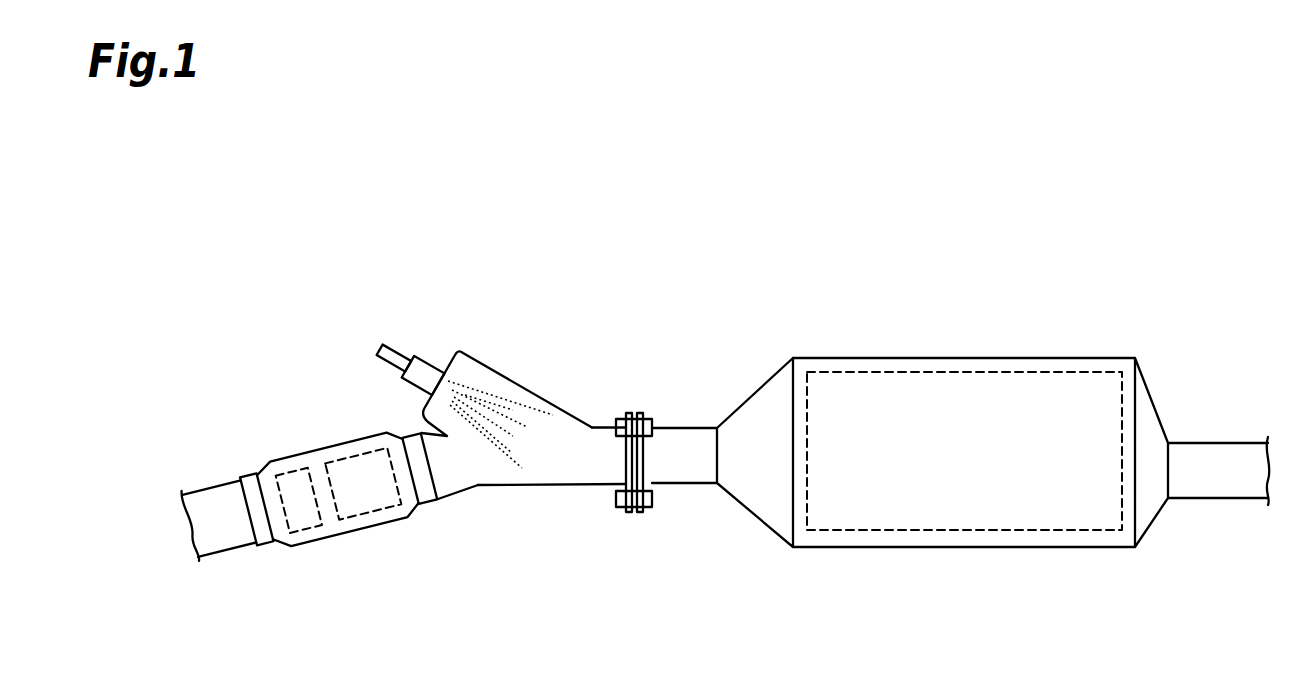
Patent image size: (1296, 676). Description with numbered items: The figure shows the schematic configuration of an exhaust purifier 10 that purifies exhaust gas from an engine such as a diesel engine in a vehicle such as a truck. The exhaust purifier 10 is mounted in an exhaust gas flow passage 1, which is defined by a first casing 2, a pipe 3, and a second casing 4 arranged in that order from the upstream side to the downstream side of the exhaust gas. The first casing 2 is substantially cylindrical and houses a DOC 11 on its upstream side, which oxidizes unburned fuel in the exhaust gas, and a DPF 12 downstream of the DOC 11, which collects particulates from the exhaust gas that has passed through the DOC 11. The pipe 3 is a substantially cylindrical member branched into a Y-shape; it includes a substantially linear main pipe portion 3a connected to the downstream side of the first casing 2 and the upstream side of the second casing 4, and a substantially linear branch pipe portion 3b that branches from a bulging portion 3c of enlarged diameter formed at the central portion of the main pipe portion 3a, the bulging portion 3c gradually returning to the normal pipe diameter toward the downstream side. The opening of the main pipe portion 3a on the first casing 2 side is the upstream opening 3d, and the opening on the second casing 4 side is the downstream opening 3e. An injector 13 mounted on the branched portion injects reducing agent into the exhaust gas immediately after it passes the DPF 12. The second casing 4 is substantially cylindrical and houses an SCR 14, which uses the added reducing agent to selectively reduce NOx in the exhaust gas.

The exhaust gas flow passage 1 is at (231, 551).
The first casing 2 is at (362, 534).
The pipe 3 is at (550, 487).
The main pipe portion 3a is at (454, 470).
The branch pipe portion 3b is at (478, 368).
The bulging portion 3c is at (542, 448).
The upstream opening 3d is at (423, 476).
The downstream opening 3e is at (627, 462).
The second casing 4 is at (968, 548).
The exhaust purifier 10 is at (957, 225).
The DOC 11 is at (289, 463).
The DPF 12 is at (349, 455).
The injector 13 is at (432, 363).
The SCR 14 is at (915, 372).